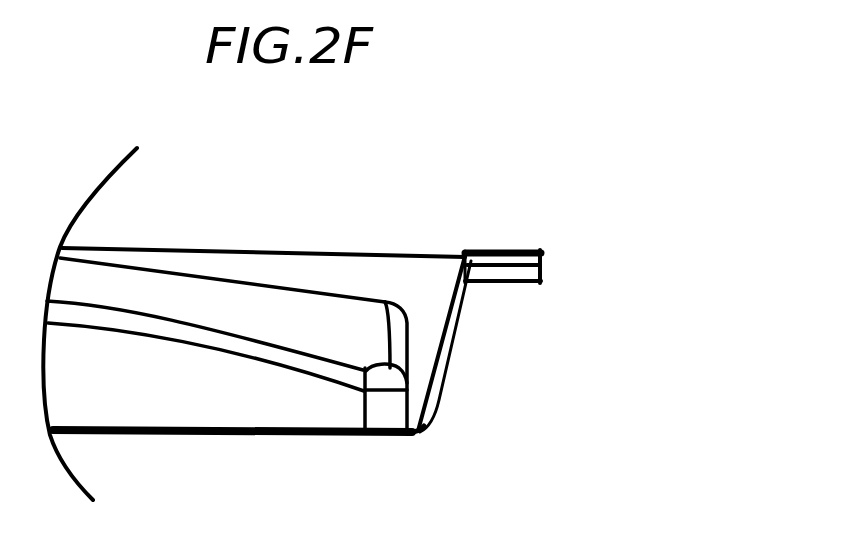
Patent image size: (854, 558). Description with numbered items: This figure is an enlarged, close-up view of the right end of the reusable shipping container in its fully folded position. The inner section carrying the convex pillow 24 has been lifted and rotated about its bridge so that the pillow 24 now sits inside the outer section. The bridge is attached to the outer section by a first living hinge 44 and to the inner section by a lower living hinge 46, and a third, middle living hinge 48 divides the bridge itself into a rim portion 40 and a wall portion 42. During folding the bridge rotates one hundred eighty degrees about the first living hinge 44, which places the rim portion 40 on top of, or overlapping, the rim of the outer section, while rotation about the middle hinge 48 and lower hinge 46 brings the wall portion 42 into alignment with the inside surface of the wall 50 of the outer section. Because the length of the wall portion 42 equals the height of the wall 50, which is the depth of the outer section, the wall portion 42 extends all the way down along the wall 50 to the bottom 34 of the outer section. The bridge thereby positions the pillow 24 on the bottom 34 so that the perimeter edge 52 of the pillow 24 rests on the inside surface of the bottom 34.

The convex pillow 24 is at (237, 281).
The bottom 34 is at (172, 438).
The rim portion 40 is at (502, 247).
The wall portion 42 is at (440, 362).
The living hinge 44 is at (545, 254).
The living hinge 46 is at (425, 437).
The living hinge 48 is at (465, 247).
The wall 50 is at (450, 329).
The perimeter edge 52 is at (107, 427).